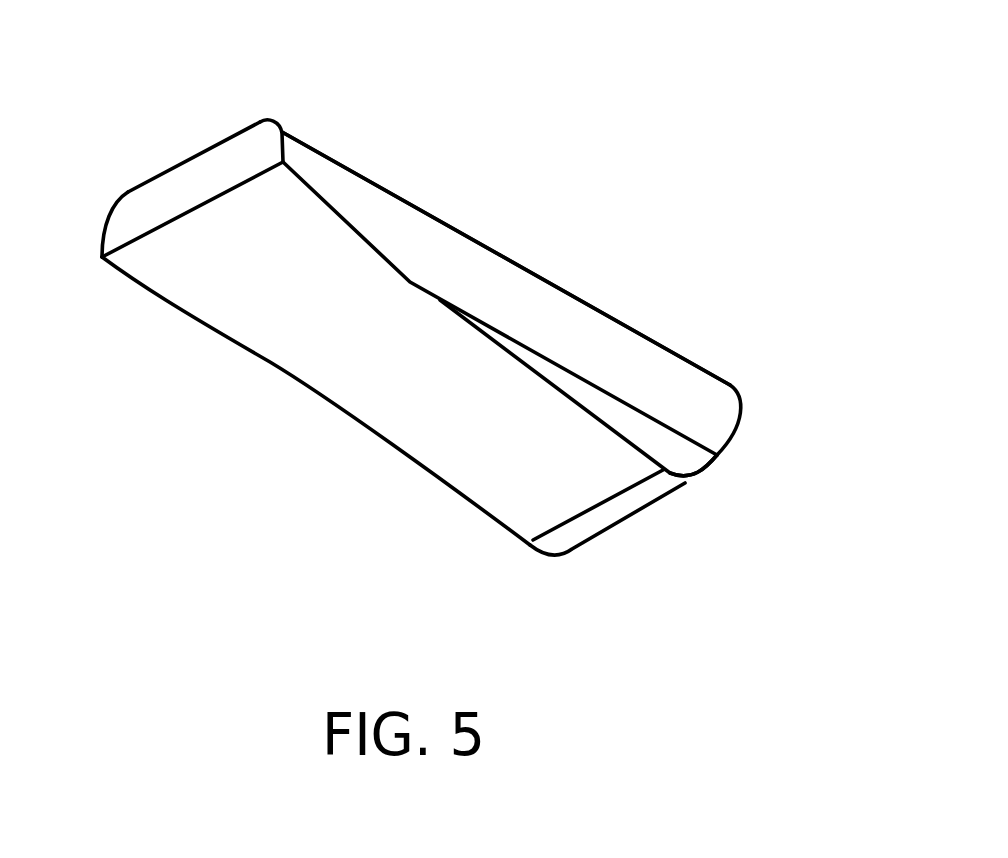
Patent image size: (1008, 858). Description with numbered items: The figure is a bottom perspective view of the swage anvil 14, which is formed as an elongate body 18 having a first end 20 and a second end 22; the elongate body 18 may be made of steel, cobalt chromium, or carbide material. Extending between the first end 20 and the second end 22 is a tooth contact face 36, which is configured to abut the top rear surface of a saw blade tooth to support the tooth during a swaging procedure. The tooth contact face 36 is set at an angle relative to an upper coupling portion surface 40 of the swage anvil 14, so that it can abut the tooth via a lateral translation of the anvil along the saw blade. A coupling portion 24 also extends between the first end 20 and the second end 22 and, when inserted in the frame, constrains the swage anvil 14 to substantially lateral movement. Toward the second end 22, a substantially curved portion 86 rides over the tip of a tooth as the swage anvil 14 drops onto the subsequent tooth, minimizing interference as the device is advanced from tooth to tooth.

The swage anvil 14 is at (653, 81).
The elongate body 18 is at (428, 210).
The first end 20 is at (252, 87).
The second end 22 is at (748, 342).
The coupling portion 24 is at (718, 415).
The tooth contact face 36 is at (370, 378).
The upper coupling portion surface 40 is at (548, 251).
The curved portion 86 is at (657, 531).